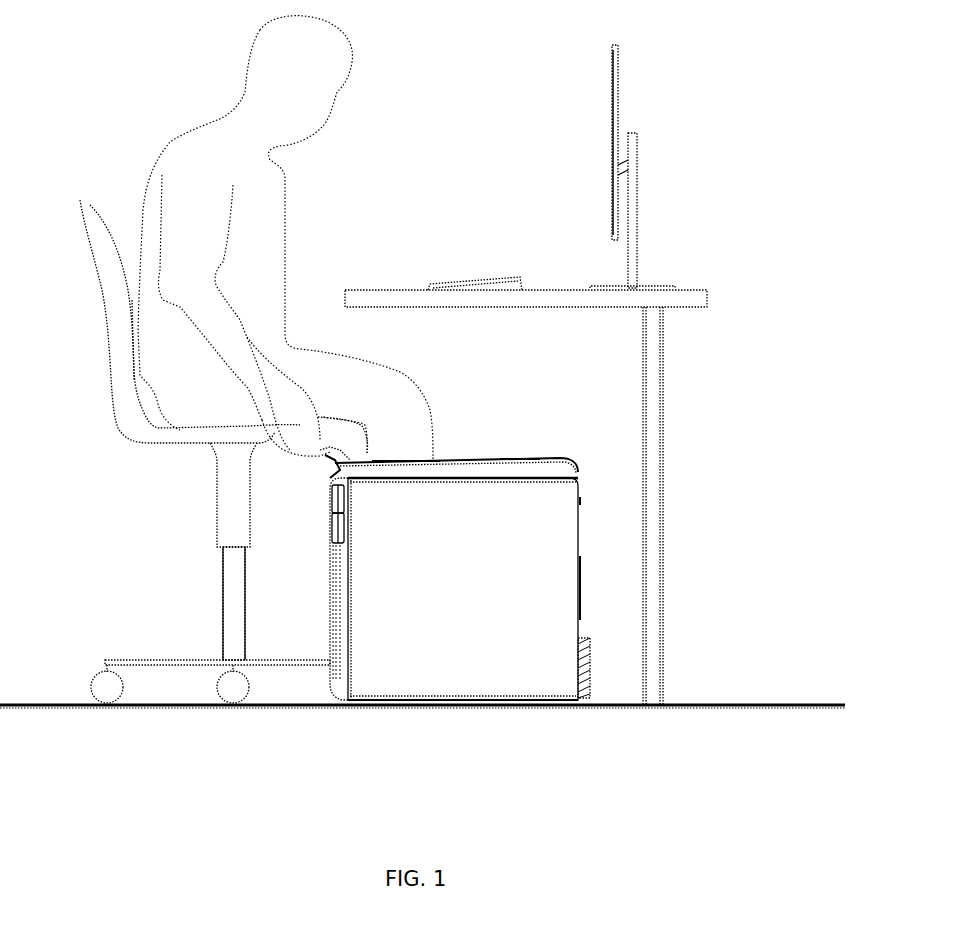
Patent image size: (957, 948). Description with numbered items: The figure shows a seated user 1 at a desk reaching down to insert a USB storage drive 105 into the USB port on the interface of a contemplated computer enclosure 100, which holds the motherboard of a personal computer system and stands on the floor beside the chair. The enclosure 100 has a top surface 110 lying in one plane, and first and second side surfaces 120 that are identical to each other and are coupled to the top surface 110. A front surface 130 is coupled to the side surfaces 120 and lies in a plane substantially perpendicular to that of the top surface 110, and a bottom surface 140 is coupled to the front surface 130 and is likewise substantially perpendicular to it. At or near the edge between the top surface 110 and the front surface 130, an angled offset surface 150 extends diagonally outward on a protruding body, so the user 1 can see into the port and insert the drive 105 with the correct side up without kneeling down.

The user 1 is at (205, 150).
The computer enclosure 100 is at (530, 578).
The USB storage drive 105 is at (325, 450).
The top surface 110 is at (562, 453).
The first and second side surfaces 120 is at (515, 655).
The front surface 130 is at (322, 617).
The bottom surface 140 is at (447, 707).
The angled offset surface 150 is at (592, 635).